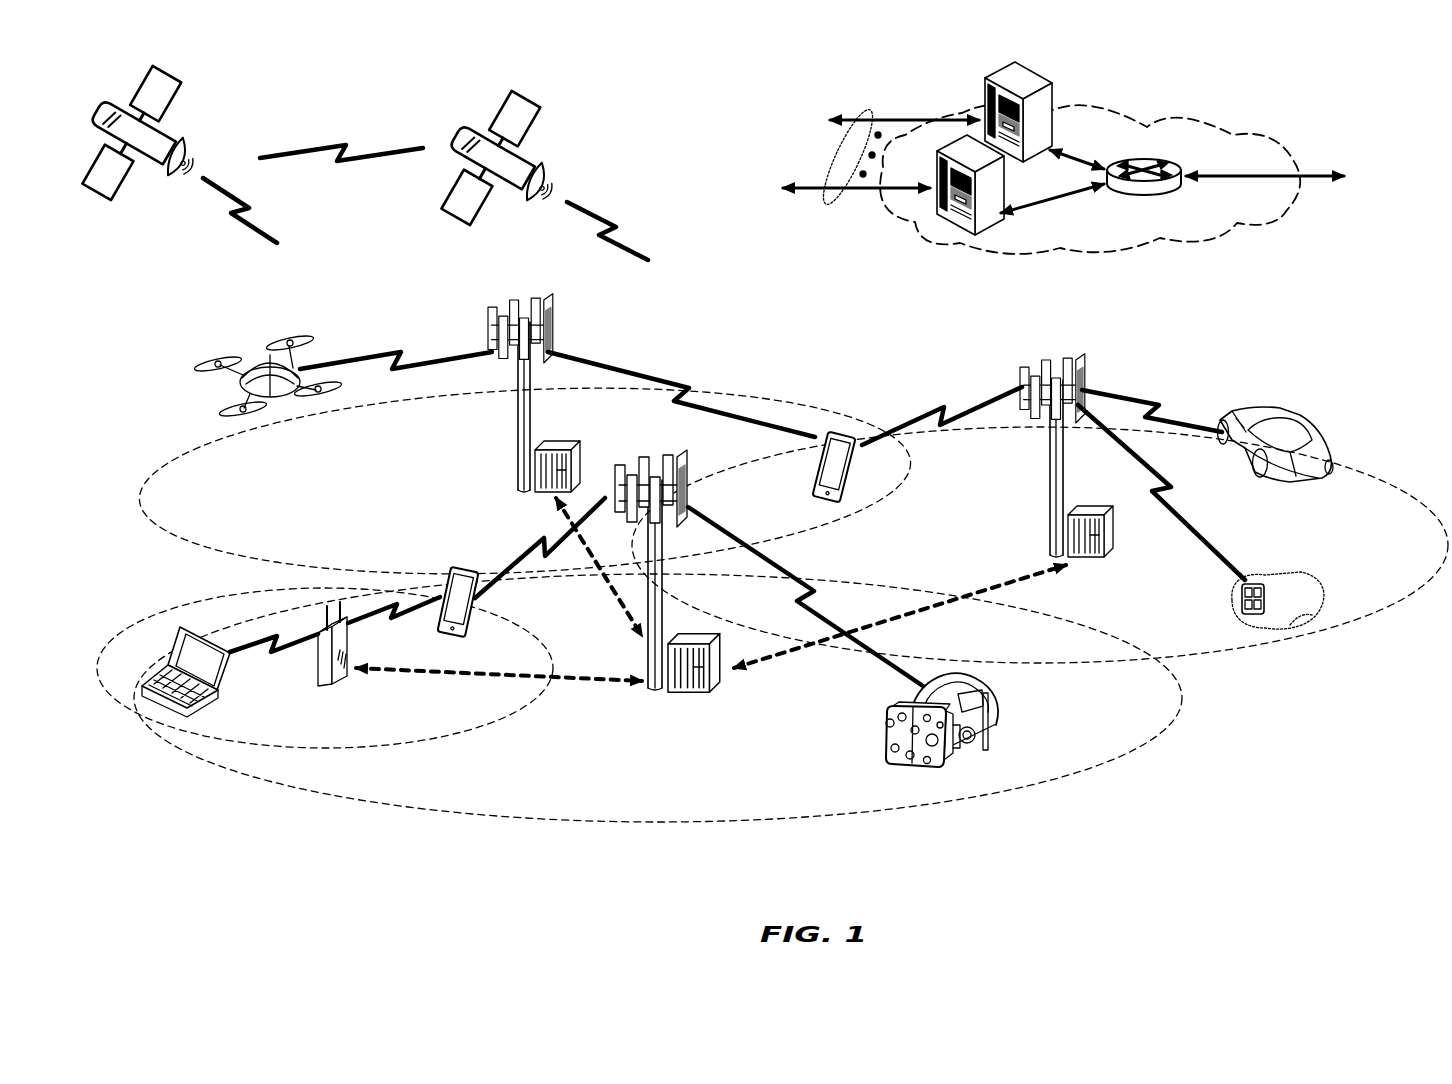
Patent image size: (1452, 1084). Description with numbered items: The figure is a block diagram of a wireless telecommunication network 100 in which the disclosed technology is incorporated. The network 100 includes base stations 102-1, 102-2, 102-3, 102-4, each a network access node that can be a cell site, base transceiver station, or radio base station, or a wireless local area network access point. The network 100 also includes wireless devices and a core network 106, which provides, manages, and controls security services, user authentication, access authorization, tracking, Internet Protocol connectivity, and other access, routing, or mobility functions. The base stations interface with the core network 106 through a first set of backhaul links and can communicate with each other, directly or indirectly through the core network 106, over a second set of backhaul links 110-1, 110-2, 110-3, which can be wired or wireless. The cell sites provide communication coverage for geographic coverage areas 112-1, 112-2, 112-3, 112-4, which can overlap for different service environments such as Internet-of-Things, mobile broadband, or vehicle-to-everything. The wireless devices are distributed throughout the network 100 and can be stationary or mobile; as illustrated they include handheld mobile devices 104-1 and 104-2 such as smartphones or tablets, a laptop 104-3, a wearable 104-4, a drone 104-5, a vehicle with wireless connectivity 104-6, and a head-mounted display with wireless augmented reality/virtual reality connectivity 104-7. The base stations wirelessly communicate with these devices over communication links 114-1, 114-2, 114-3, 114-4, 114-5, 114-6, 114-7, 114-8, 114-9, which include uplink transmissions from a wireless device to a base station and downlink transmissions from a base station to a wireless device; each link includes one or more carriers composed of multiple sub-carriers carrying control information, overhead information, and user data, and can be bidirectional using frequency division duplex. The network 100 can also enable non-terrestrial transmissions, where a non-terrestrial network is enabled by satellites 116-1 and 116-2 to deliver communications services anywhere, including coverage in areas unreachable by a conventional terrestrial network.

The wireless telecommunication network 100 is at (1382, 131).
The base station 102-1 is at (658, 693).
The base station 102-2 is at (520, 438).
The base station 102-3 is at (1045, 470).
The base station 102-4 is at (322, 676).
The handheld mobile device 104-1 is at (473, 612).
The handheld mobile device 104-2 is at (816, 473).
The laptop 104-3 is at (165, 710).
The wearable 104-4 is at (1258, 582).
The drone 104-5 is at (278, 405).
The vehicle with wireless connectivity 104-6 is at (1295, 423).
The head-mounted display 104-7 is at (999, 708).
The core network 106 is at (1180, 243).
The backhaul link 110-1 is at (390, 675).
The backhaul link 110-2 is at (968, 595).
The backhaul link 110-3 is at (612, 595).
The geographic coverage area 112-1 is at (582, 823).
The geographic coverage area 112-2 is at (455, 740).
The geographic coverage area 112-3 is at (228, 542).
The geographic coverage area 112-4 is at (1353, 470).
The communication link 114-1 is at (812, 598).
The communication link 114-2 is at (543, 548).
The communication link 114-3 is at (245, 648).
The communication link 114-4 is at (390, 612).
The communication link 114-5 is at (405, 351).
The communication link 114-6 is at (688, 386).
The communication link 114-7 is at (942, 406).
The communication link 114-8 is at (1178, 512).
The communication link 114-9 is at (1148, 405).
The satellite 116-1 is at (178, 148).
The satellite 116-2 is at (538, 172).